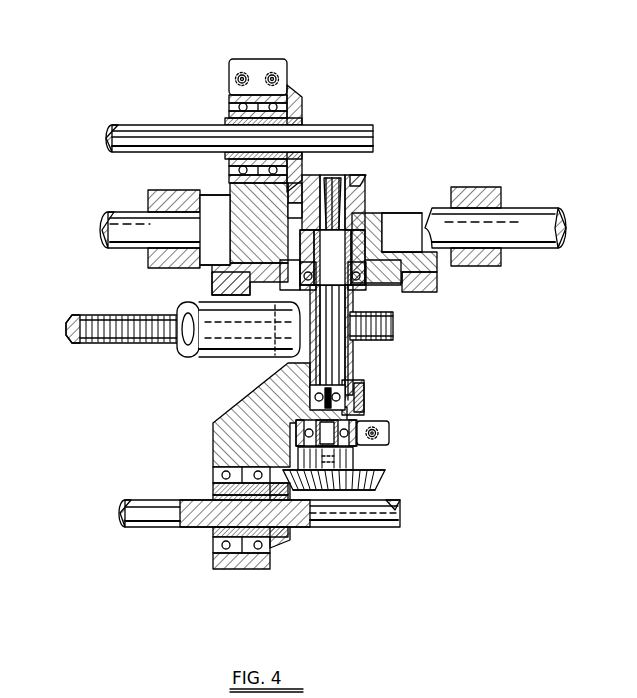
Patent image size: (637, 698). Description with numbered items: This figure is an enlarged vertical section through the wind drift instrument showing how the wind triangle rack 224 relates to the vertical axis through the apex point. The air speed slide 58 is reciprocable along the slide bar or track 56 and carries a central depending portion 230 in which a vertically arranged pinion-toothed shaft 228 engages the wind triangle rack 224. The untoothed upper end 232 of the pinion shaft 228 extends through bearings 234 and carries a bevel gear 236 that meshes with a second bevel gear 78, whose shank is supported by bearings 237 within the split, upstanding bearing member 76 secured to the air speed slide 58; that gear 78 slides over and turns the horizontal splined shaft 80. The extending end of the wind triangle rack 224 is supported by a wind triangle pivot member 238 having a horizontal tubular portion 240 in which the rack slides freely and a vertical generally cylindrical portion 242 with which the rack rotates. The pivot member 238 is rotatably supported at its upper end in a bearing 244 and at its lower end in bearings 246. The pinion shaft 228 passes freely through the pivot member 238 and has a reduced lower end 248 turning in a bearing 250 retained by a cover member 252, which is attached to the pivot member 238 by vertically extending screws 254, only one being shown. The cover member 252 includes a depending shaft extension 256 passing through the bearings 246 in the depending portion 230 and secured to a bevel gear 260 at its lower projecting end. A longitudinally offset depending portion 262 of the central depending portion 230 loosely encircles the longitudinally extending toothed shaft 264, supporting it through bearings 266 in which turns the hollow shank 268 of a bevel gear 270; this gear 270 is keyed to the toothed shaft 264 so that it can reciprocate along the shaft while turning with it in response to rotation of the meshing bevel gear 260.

The slide bar or track 56 is at (128, 218).
The air speed slide 58 is at (505, 192).
The split, upstanding bearing member 76 is at (237, 68).
The bevel gear 78 is at (301, 100).
The splined shaft 80 is at (140, 134).
The wind triangle rack 224 is at (88, 340).
The pinion-toothed shaft 228 is at (330, 366).
The central depending portion 230 is at (352, 350).
The untoothed upper end 232 is at (326, 178).
The bearings 234 is at (352, 214).
The bevel gear 236 is at (352, 186).
The bearings 237 is at (232, 106).
The wind triangle pivot member 238 is at (200, 357).
The horizontal tubular portion 240 is at (175, 342).
The vertical generally cylindrical portion 242 is at (288, 367).
The bearing 244 is at (212, 284).
The bearings 246 is at (373, 450).
The reduced lower end 248 is at (364, 392).
The bearing 250 is at (345, 405).
The cover member 252 is at (300, 420).
The vertically extending screws 254 is at (364, 409).
The depending shaft extension 256 is at (360, 490).
The bevel gear 260 is at (330, 487).
The longitudinally offset depending portion 262 is at (230, 570).
The toothed shaft 264 is at (122, 528).
The bearings 266 is at (218, 545).
The hollow shank 268 is at (210, 526).
The bevel gear 270 is at (287, 543).